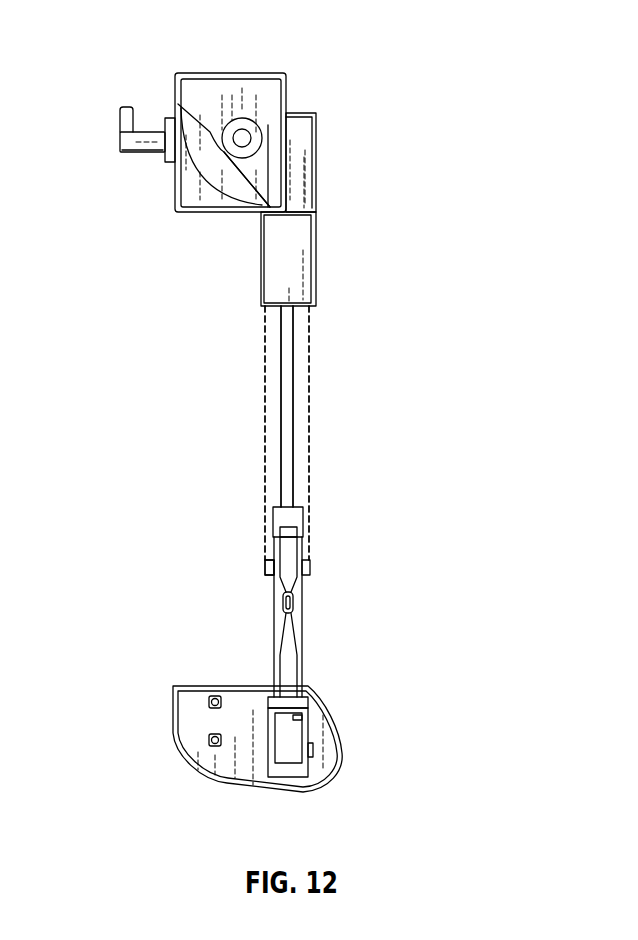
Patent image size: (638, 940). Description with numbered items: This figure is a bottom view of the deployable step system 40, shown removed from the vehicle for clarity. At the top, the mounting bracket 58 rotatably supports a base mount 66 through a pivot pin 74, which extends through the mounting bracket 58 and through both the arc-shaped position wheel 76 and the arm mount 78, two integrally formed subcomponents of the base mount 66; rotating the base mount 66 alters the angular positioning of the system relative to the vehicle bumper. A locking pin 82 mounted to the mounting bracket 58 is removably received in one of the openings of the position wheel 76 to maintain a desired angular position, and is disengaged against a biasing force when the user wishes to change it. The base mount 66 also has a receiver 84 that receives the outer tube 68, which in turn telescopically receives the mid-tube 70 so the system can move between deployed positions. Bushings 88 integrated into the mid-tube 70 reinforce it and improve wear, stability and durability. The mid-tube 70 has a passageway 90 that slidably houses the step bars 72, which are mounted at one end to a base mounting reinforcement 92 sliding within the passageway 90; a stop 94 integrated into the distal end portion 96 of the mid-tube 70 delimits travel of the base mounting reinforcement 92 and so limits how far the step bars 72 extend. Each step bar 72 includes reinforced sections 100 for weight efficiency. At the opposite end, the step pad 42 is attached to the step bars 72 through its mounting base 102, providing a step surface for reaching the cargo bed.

The deployable step system 40 is at (362, 52).
The step pad 42 is at (252, 794).
The mounting bracket 58 is at (233, 92).
The base mount 66 is at (319, 136).
The outer tube 68 is at (319, 281).
The mid-tube 70 is at (320, 392).
The step bar 72 is at (298, 607).
The pivot pin 74 is at (243, 138).
The position wheel 76 is at (210, 183).
The arm mount 78 is at (260, 177).
The locking pin 82 is at (143, 153).
The receiver 84 is at (319, 164).
The bushing 88 is at (285, 375).
The passageway 90 is at (300, 427).
The base mounting reinforcement 92 is at (305, 522).
The stop 94 is at (268, 568).
The distal end portion 96 is at (257, 559).
The reinforced section 100 is at (288, 558).
The mounting base 102 is at (308, 770).